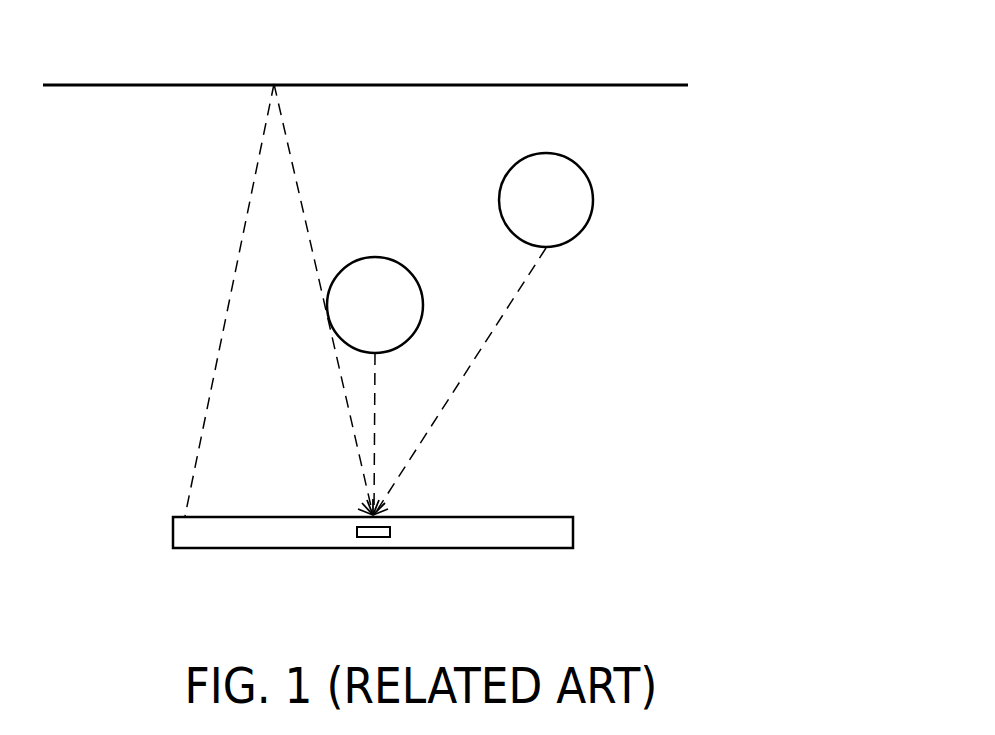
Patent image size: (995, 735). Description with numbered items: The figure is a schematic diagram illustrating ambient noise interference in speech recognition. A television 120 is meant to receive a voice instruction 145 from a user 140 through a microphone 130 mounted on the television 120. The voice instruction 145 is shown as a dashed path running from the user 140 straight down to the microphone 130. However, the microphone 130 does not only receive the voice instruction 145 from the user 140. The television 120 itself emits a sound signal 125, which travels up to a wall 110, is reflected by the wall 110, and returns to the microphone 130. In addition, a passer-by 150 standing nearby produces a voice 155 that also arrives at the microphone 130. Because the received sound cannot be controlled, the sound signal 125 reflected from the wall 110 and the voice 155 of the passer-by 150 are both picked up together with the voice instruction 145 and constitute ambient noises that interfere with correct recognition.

The wall 110 is at (613, 84).
The television 120 is at (574, 533).
The microphone 130 is at (391, 531).
The user 140 is at (375, 257).
The passer-by 150 is at (594, 200).
The sound signal 125 is at (216, 346).
The voice instruction 145 is at (376, 402).
The voice 155 is at (510, 309).